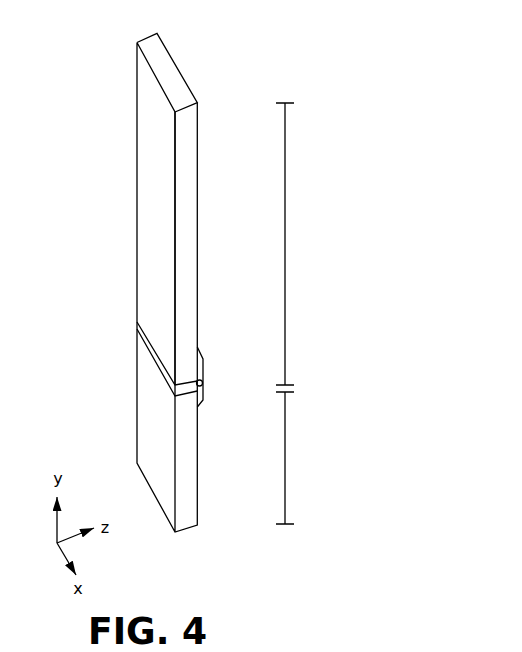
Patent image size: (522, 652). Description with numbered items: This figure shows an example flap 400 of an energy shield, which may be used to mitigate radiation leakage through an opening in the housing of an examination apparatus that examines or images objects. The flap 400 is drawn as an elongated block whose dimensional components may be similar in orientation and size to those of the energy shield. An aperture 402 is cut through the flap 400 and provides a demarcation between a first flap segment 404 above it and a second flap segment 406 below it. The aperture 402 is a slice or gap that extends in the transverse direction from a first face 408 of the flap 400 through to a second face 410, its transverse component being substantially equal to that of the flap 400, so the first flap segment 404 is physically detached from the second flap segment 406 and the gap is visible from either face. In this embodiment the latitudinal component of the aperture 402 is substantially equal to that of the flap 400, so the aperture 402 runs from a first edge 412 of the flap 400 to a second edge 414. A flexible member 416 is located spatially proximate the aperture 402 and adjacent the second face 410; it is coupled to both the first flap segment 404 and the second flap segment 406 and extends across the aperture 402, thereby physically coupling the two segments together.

The flap 400 is at (243, 32).
The aperture 402 is at (137, 322).
The first flap segment 404 is at (285, 242).
The second flap segment 406 is at (285, 465).
The first face 408 is at (152, 190).
The second face 410 is at (204, 160).
The first edge 412 is at (187, 323).
The second edge 414 is at (133, 122).
The flexible member 416 is at (198, 407).